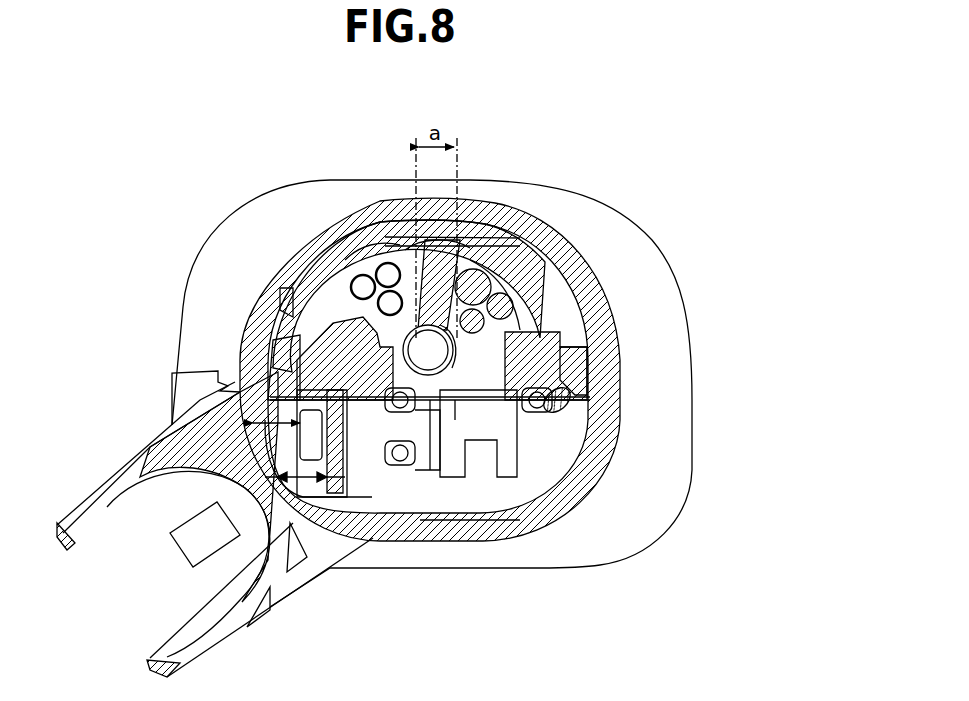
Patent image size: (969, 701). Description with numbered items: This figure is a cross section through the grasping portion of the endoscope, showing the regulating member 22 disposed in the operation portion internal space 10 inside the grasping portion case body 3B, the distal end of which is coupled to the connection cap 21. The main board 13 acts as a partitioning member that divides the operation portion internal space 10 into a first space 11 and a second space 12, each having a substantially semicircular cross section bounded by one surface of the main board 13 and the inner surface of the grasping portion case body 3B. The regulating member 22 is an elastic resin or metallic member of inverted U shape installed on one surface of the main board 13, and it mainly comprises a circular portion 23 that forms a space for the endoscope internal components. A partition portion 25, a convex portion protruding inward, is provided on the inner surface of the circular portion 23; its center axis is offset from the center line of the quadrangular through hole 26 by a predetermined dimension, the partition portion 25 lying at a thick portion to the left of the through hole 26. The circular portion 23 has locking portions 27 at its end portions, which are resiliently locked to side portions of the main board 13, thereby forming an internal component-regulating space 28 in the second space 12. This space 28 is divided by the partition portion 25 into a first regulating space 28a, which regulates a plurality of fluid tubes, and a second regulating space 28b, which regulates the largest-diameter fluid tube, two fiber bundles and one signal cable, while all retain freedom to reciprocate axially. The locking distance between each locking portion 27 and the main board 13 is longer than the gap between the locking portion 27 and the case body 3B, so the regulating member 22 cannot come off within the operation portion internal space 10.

The grasping portion case body 3B is at (627, 253).
The operation portion internal space 10 is at (725, 297).
The first space 11 is at (566, 442).
The second space 12 is at (566, 301).
The main board 13 is at (290, 370).
The connection cap 21 is at (583, 272).
The regulating member 22 is at (302, 330).
The circular portion 23 is at (335, 355).
The partition portion 25 is at (372, 272).
The through hole 26 is at (470, 265).
The locking portions 27 is at (555, 426).
The internal component-regulating space 28 is at (257, 110).
The first regulating space 28a is at (293, 305).
The second regulating space 28b is at (535, 285).